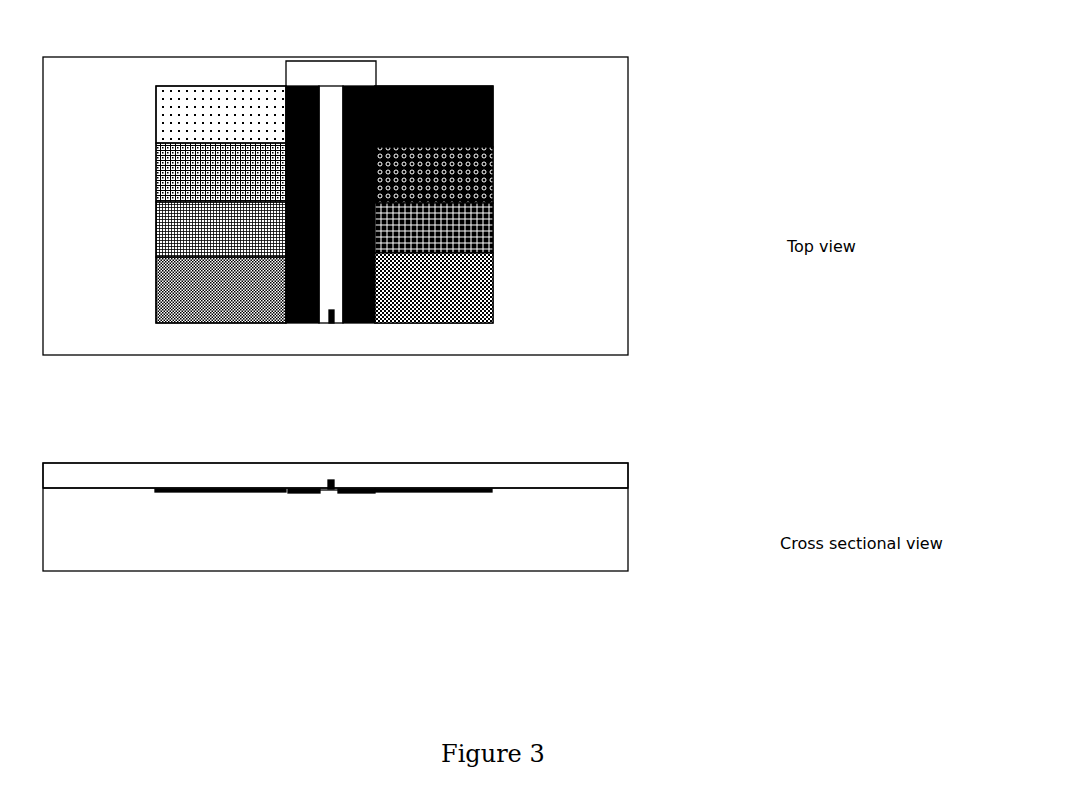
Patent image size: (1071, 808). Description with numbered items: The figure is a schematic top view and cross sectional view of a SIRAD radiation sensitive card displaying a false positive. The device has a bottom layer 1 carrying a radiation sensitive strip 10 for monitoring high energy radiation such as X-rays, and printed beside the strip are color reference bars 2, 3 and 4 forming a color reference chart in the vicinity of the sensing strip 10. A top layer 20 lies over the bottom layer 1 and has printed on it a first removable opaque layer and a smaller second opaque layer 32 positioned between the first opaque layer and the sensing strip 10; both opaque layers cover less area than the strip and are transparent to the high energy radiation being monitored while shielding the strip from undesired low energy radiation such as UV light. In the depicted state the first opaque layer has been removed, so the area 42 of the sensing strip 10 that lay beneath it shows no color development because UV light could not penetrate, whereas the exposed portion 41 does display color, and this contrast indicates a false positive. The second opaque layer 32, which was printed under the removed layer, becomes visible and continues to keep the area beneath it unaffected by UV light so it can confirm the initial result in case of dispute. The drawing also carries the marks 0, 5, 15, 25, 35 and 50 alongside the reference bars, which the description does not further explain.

The bottom layer 1 is at (593, 187).
The color reference bar 2 is at (308, 73).
The color reference bar 3 is at (225, 108).
The color reference bar 4 is at (429, 88).
The fifth row region of first pad 5 is at (207, 229).
The radiation sensitive strip 10 is at (359, 86).
The first region of second pad 15 is at (451, 116).
The top layer 20 is at (608, 475).
The second region of second pad 25 is at (451, 175).
The second opaque layer 32 is at (332, 323).
The third region of second pad 35 is at (451, 228).
The exposed portion 41 is at (302, 88).
The area under first opaque layer 42 is at (341, 107).
The fourth region of second pad 50 is at (451, 288).
The origin mark 0 is at (330, 73).